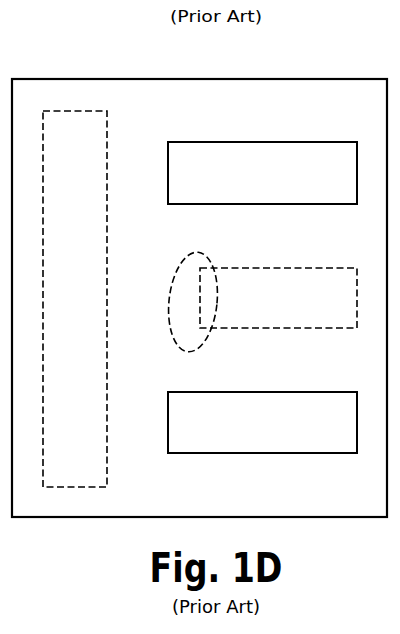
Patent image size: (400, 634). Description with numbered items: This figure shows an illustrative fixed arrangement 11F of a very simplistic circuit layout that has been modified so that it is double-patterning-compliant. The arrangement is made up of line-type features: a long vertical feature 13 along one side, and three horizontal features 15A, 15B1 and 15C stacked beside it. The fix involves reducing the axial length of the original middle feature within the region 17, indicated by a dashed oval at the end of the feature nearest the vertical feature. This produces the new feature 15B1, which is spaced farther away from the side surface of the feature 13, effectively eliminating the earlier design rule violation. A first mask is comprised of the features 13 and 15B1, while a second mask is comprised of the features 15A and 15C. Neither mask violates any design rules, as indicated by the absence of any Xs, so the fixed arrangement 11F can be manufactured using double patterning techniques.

The fixed arrangement 11F is at (116, 58).
The line-type feature 13 is at (75, 299).
The line-type feature 15A is at (262, 173).
The new feature 15B1 is at (278, 298).
The line-type feature 15C is at (262, 422).
The region 17 is at (170, 251).